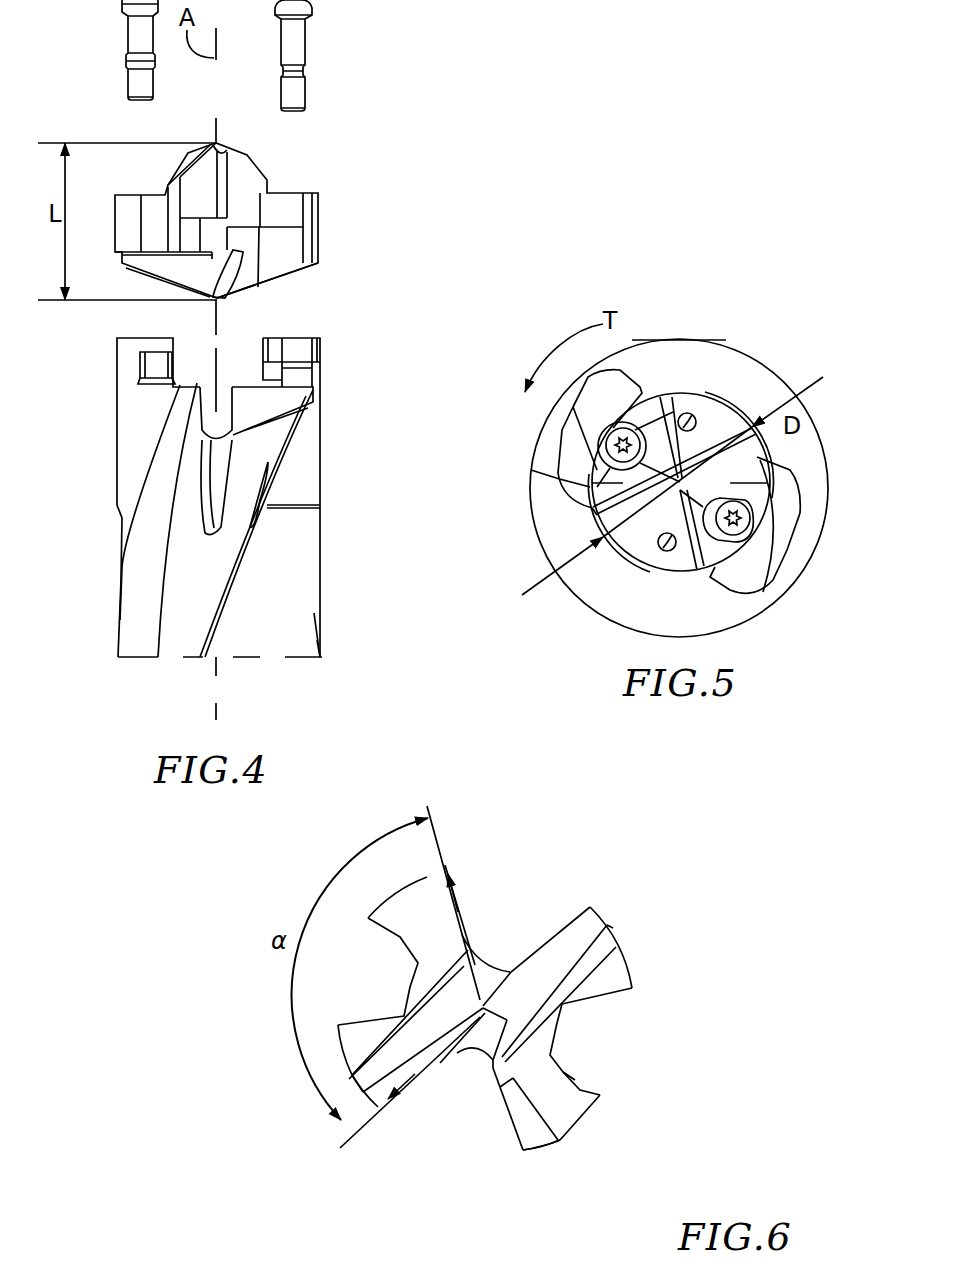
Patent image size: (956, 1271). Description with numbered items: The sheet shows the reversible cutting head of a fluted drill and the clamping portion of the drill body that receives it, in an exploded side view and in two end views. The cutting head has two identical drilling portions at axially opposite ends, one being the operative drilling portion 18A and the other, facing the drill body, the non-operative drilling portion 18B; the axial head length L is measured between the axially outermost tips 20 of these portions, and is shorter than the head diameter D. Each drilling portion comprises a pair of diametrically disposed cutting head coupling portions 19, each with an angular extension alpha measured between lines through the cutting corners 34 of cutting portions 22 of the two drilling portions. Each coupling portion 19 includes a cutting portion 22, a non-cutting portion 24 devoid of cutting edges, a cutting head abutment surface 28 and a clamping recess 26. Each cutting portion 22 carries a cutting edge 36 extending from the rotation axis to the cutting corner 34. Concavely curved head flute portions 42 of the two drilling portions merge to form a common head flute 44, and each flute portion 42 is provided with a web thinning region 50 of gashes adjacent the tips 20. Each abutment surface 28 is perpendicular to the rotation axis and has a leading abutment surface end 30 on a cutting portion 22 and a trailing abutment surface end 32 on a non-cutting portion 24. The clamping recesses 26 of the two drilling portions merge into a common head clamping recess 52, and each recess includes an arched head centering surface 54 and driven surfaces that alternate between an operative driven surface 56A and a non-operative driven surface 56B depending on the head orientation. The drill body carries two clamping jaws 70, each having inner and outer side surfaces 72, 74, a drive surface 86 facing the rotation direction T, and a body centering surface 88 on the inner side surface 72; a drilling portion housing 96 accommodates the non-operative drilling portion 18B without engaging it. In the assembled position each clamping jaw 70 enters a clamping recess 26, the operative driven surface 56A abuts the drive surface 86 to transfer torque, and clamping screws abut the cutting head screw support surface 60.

In FIG. 4, the operative drilling portion 18A is at (322, 162).
In FIG. 4, the non-operative drilling portion 18B is at (315, 261).
In FIG. 6, the cutting head coupling portion 19 is at (351, 925).
In FIG. 4, the axially outermost tip 20 is at (217, 143).
In FIG. 4, the cutting portion 22 is at (320, 242).
In FIG. 6, the cutting portion 22 is at (615, 912).
In FIG. 4, the non-cutting portion 24 is at (325, 205).
In FIG. 6, the non-cutting portion 24 is at (555, 1147).
In FIG. 6, the clamping recess 26 is at (590, 1049).
In FIG. 6, the cutting head abutment surface 28 is at (563, 1090).
In FIG. 6, the leading abutment surface end 30 is at (612, 977).
In FIG. 6, the trailing abutment surface end 32 is at (548, 1105).
In FIG. 5, the cutting corner 34 is at (751, 427).
In FIG. 6, the cutting corner 34 is at (445, 866).
In FIG. 6, the cutting edge 36 is at (535, 960).
In FIG. 4, the head flute portion 42 is at (222, 247).
In FIG. 6, the head flute portion 42 is at (517, 955).
In FIG. 6, the common head flute 44 is at (495, 958).
In FIG. 6, the web thinning region 50 is at (474, 1034).
In FIG. 6, the common head clamping recess 52 is at (402, 983).
In FIG. 5, the head centering surface 54 is at (753, 494).
In FIG. 6, the head centering surface 54 is at (563, 1026).
In FIG. 6, the operative driven surface 56A is at (606, 993).
In FIG. 6, the non-operative driven surface 56B is at (591, 1087).
In FIG. 6, the cutting head screw support surface 60 is at (406, 942).
In FIG. 4, the clamping jaw 70 is at (116, 362).
In FIG. 5, the inner side surface 72 is at (605, 518).
In FIG. 5, the outer side surface 74 is at (597, 455).
In FIG. 4, the drive surface 86 is at (161, 372).
In FIG. 5, the body centering surface 88 is at (735, 528).
In FIG. 4, the drilling portion housing 96 is at (223, 393).